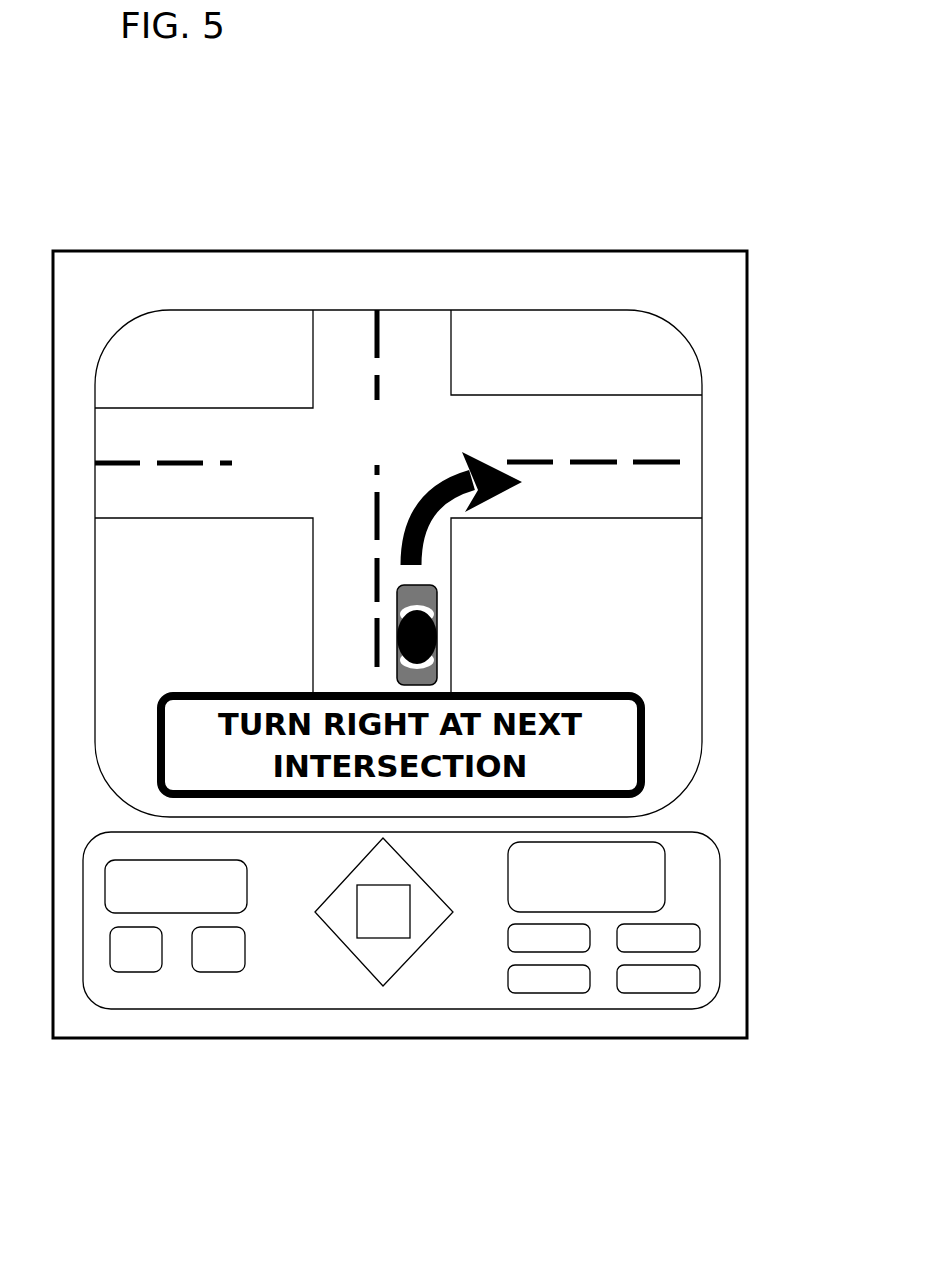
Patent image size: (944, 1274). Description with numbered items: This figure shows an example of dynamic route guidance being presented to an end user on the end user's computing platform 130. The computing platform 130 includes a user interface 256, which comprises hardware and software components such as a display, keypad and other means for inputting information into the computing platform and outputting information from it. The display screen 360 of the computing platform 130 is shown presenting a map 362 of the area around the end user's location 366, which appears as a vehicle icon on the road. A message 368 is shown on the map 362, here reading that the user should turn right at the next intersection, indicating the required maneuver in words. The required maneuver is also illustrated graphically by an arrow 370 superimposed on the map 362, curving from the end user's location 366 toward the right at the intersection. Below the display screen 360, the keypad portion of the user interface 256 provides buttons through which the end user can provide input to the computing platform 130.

The end user's computing platform 130 is at (490, 242).
The user interface 256 is at (452, 967).
The display screen 360 is at (257, 307).
The map 362 is at (217, 353).
The end user's location 366 is at (438, 612).
The message 368 is at (602, 677).
The arrow 370 is at (437, 475).